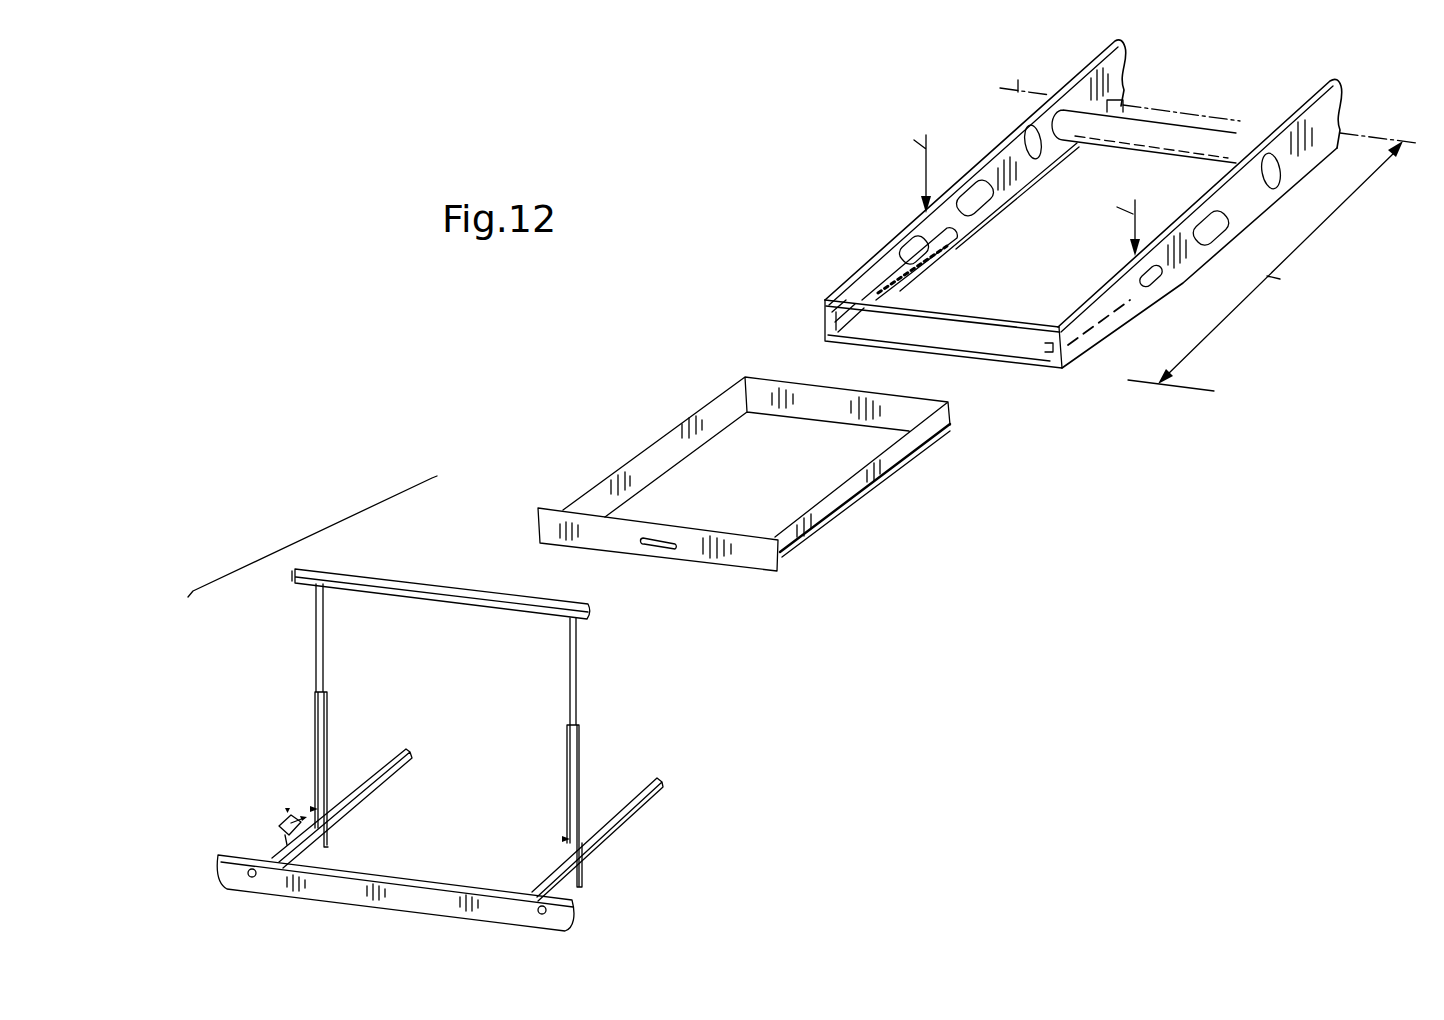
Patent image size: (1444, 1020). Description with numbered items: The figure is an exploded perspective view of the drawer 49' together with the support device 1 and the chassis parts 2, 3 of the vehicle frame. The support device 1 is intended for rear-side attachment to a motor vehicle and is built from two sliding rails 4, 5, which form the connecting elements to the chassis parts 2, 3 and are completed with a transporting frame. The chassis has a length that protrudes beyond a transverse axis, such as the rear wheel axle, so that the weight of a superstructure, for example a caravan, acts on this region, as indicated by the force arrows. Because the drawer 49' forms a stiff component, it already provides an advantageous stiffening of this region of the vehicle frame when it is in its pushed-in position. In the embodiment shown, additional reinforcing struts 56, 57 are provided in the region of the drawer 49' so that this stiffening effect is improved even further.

The support device 1 is at (279, 552).
The chassis part 2 is at (1053, 378).
The chassis part 3 is at (884, 262).
The sliding rail 4 is at (648, 837).
The sliding rail 5 is at (371, 720).
The drawer 49' is at (744, 458).
The strut 56 is at (972, 357).
The strut 57 is at (1008, 326).